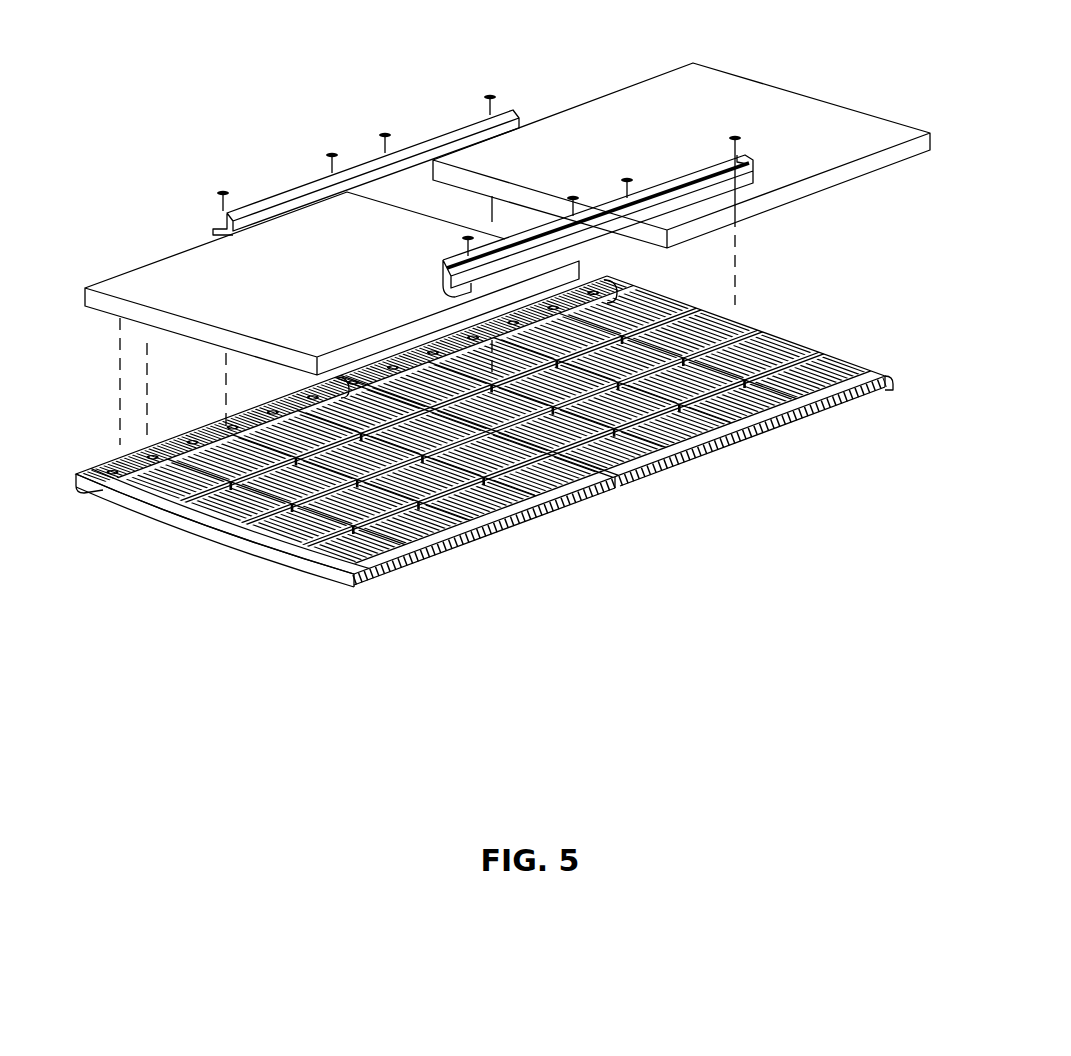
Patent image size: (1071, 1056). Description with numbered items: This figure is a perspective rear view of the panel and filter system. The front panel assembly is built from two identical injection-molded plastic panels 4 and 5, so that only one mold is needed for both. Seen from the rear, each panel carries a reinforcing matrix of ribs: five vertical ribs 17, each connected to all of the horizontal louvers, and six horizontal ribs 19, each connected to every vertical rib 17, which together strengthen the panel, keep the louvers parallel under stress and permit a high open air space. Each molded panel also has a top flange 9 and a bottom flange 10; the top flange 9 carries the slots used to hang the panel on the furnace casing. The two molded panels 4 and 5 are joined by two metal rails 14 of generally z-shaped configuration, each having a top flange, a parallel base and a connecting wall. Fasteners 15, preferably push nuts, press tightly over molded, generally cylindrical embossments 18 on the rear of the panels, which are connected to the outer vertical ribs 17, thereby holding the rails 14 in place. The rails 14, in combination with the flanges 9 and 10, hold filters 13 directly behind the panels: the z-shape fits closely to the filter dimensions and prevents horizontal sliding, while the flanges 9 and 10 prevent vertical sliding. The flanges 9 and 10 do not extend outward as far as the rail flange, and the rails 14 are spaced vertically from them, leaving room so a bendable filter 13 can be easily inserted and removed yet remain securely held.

The molded panel 4 is at (767, 423).
The molded panel 5 is at (520, 517).
The top flange 9 is at (807, 357).
The bottom flange 10 is at (223, 537).
The filter 13 is at (162, 292).
The metal rail 14 is at (435, 137).
The fastener 15 is at (735, 133).
The vertical rib 17 is at (327, 537).
The cylindrical embossment 18 is at (110, 500).
The horizontal rib 19 is at (283, 523).